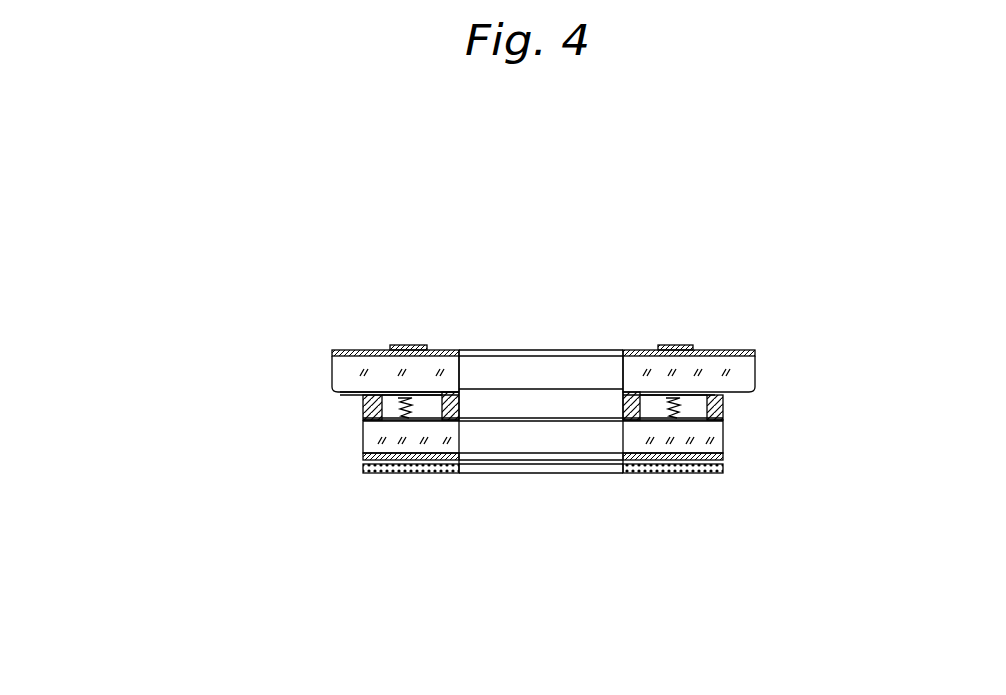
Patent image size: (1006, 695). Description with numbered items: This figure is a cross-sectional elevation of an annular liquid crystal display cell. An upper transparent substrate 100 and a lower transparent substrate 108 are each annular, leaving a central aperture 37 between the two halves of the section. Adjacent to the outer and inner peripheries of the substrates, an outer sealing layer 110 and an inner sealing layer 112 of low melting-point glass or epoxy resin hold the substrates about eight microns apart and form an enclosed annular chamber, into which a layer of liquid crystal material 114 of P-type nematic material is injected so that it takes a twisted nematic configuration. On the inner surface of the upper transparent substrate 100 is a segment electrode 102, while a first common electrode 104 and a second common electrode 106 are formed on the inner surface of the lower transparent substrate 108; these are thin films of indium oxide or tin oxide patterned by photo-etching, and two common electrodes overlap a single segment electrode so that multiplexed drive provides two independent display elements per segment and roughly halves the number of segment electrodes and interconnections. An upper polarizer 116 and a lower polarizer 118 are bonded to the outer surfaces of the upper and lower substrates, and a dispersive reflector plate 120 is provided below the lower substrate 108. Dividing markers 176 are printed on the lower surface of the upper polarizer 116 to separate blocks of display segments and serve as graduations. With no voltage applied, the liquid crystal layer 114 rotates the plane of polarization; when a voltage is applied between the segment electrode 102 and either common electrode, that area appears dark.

The upper transparent substrate 100 is at (336, 373).
The segment electrode 102 is at (385, 388).
The first common electrode 104 is at (388, 422).
The second common electrode 106 is at (438, 421).
The lower transparent substrate 108 is at (637, 471).
The outer sealing layer 110 is at (362, 410).
The inner sealing layer 112 is at (460, 400).
The liquid crystal layer 114 is at (420, 392).
The upper polarizer 116 is at (740, 350).
The lower polarizer 118 is at (725, 458).
The dispersive reflector plate 120 is at (425, 473).
The dividing marker 176 is at (672, 332).
The central aperture 37 is at (558, 365).